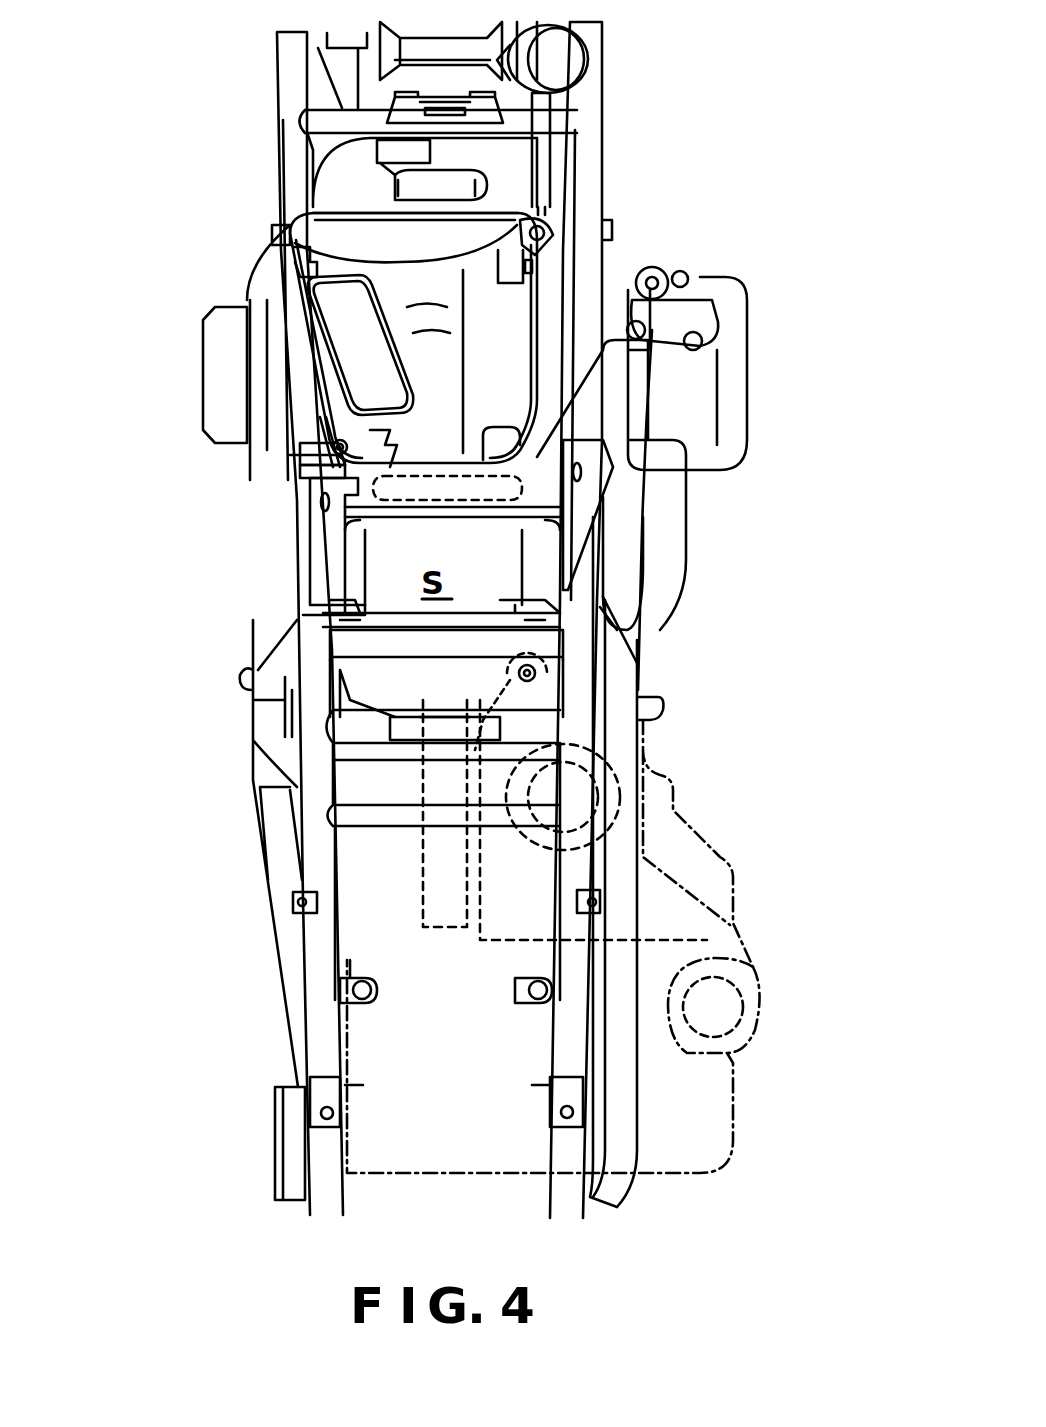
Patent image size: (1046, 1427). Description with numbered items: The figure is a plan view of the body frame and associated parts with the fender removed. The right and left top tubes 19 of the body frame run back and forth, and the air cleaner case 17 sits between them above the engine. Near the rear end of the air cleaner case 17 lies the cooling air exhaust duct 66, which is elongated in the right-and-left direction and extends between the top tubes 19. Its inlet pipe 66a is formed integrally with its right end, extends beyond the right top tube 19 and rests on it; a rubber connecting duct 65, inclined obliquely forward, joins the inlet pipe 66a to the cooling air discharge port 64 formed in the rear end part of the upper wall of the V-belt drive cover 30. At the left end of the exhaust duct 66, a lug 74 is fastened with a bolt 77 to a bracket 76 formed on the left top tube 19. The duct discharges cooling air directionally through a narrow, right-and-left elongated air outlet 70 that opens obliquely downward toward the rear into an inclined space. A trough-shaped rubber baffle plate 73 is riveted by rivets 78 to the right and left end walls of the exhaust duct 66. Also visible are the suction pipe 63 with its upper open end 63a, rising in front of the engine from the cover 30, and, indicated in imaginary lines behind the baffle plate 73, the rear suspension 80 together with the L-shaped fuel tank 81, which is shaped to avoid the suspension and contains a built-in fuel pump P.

The air cleaner case 17 is at (520, 335).
The top tubes 19 is at (583, 650).
The V-belt drive cover 30 is at (735, 372).
The suction pipe 63 is at (608, 116).
The upper open end 63a is at (573, 62).
The cooling air discharge port 64 is at (620, 597).
The connecting duct 65 is at (630, 540).
The cooling air exhaust duct 66 is at (390, 470).
The inlet pipe 66a is at (628, 442).
The air outlet 70 is at (443, 487).
The baffle plate 73 is at (320, 567).
The lug 74 is at (290, 457).
The bracket 76 is at (333, 443).
The bolt 77 is at (330, 455).
The rivets 78 is at (320, 505).
The rear suspension 80 is at (433, 857).
The fuel tank 81 is at (720, 863).
The fuel pump P is at (617, 807).